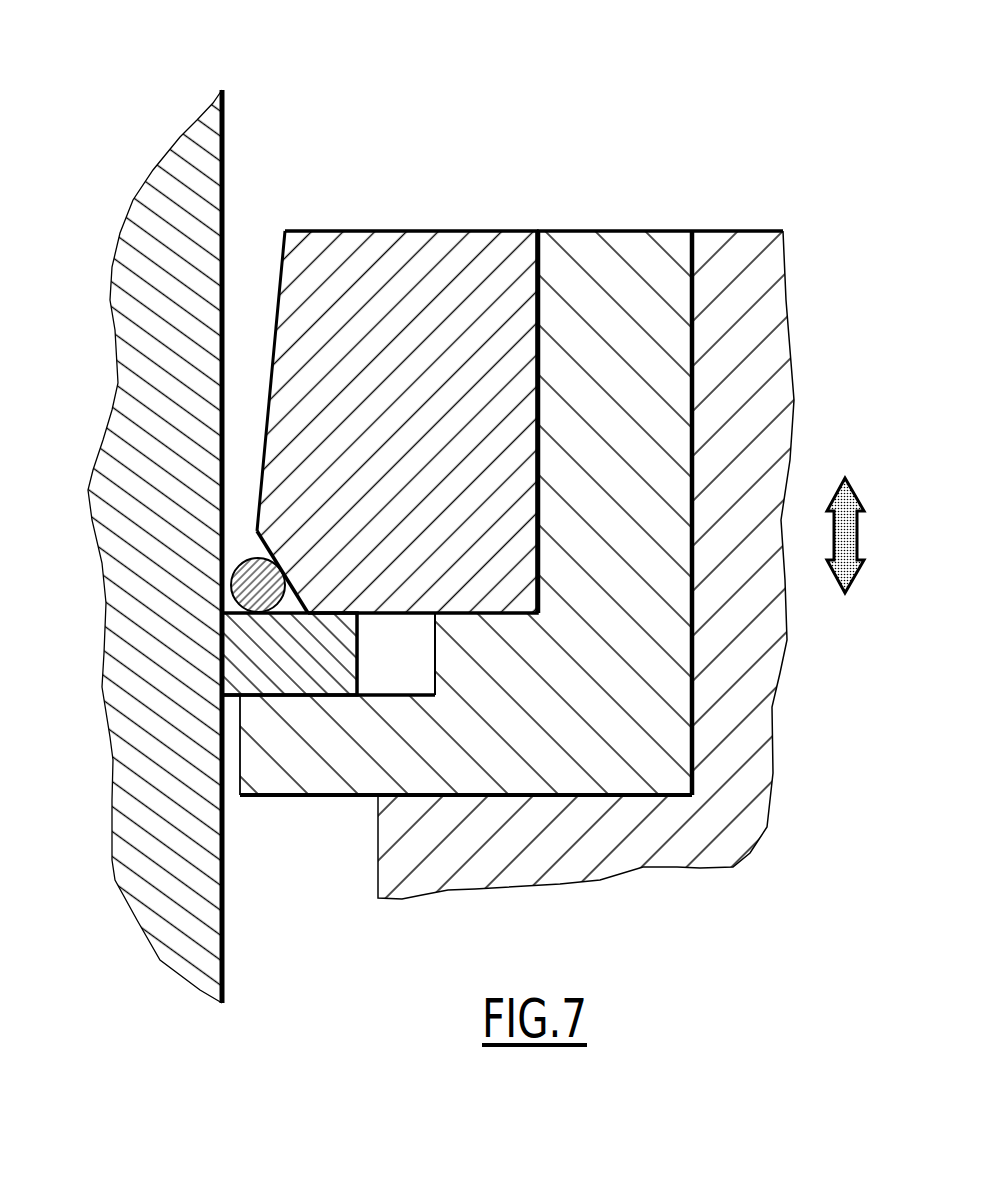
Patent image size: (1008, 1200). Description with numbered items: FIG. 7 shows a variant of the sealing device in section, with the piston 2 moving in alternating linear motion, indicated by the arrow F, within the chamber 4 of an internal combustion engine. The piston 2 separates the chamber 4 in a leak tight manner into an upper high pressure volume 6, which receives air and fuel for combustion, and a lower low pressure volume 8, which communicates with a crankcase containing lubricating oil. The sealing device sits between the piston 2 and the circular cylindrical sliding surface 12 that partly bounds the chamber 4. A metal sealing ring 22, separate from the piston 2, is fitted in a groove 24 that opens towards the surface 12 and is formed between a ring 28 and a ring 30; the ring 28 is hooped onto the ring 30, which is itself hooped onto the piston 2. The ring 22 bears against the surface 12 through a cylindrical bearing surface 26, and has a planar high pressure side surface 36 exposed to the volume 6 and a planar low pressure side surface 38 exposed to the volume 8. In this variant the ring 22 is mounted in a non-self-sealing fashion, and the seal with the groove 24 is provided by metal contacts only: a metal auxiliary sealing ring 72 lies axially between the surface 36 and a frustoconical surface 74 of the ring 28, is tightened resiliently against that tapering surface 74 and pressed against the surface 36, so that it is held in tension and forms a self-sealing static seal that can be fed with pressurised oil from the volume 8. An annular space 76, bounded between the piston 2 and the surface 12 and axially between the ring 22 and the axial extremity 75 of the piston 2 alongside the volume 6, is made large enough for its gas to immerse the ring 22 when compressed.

The piston 2 is at (820, 328).
The chamber 4 is at (284, 72).
The upper high pressure volume 6 is at (506, 127).
The lower low pressure volume 8 is at (614, 922).
The sliding surface 12 is at (224, 154).
The metal sealing ring 22 is at (243, 673).
The groove 24 is at (398, 650).
The cylindrical bearing surface 26 is at (223, 647).
The ring 28 is at (410, 260).
The ring 30 is at (605, 260).
The high pressure side surface 36 is at (294, 600).
The low pressure side surface 38 is at (229, 697).
The metal auxiliary sealing ring 72 is at (243, 590).
The frustoconical surface 74 is at (240, 556).
The axial extremity 75 is at (285, 231).
The annular space 76 is at (253, 238).
The arrow F is at (857, 533).